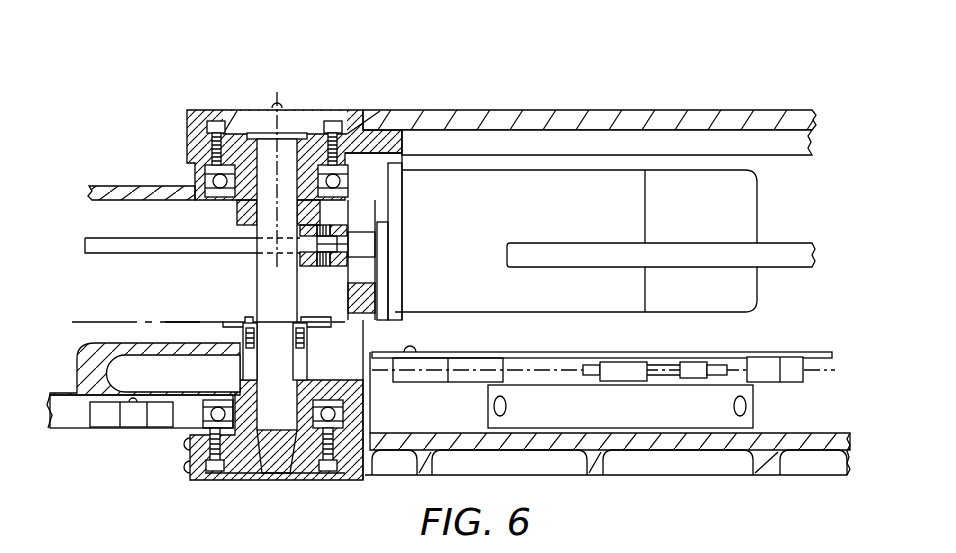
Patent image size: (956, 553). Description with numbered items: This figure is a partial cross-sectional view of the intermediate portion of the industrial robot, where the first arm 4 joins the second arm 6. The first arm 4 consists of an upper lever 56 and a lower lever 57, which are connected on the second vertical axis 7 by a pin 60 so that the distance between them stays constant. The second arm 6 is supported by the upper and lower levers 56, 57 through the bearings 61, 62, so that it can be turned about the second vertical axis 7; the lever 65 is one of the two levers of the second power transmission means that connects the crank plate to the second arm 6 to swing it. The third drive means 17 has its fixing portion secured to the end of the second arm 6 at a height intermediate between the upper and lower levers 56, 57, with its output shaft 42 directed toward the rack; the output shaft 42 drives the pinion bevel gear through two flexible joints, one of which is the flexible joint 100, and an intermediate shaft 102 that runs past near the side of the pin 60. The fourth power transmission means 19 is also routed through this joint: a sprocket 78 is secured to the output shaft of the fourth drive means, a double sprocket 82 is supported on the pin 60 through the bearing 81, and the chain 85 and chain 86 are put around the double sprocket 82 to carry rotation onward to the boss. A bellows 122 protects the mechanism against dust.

The first arm 4 is at (604, 109).
The upper lever 56 is at (712, 109).
The bellows 122 is at (746, 197).
The lever 65 is at (795, 248).
The third drive means 17 is at (652, 298).
The fourth power transmission means 19 is at (92, 319).
The chain 85 is at (783, 372).
The lower lever 57 is at (822, 440).
The output shaft 42 is at (372, 246).
The second vertical axis 7 is at (272, 90).
The second arm 6 is at (112, 186).
The bearing 61 is at (205, 177).
The intermediate shaft 102 is at (120, 241).
The sprocket 78 is at (148, 249).
The chain 86 is at (163, 320).
The double sprocket 82 is at (239, 316).
The pin 60 is at (288, 290).
The flexible joint 100 is at (328, 266).
The bearing 81 is at (241, 357).
The bearing 62 is at (207, 418).